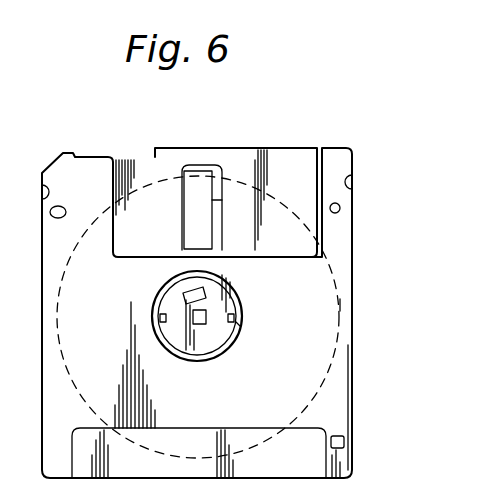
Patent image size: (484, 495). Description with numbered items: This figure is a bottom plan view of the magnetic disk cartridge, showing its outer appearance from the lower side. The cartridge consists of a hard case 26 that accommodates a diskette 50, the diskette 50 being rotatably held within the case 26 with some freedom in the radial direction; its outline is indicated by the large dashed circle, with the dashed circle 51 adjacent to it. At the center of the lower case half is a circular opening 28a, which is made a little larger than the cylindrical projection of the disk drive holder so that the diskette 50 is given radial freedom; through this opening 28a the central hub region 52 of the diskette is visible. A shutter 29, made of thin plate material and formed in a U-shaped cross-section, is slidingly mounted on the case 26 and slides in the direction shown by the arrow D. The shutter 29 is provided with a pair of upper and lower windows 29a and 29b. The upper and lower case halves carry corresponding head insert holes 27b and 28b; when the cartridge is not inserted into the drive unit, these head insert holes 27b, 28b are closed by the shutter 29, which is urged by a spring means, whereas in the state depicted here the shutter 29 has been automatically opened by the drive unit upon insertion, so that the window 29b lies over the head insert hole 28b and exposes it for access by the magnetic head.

The hard case 26 is at (354, 163).
The shutter 29 is at (165, 148).
The head insert hole 28b is at (224, 178).
The head insert hole 27b is at (193, 187).
The lower window 29b is at (290, 153).
The upper window 29a is at (218, 197).
The diskette 50 is at (336, 272).
The disk recording medium 51 is at (340, 305).
The circular opening 28a is at (207, 356).
The hub 52 is at (237, 322).
The arrow D is at (80, 125).